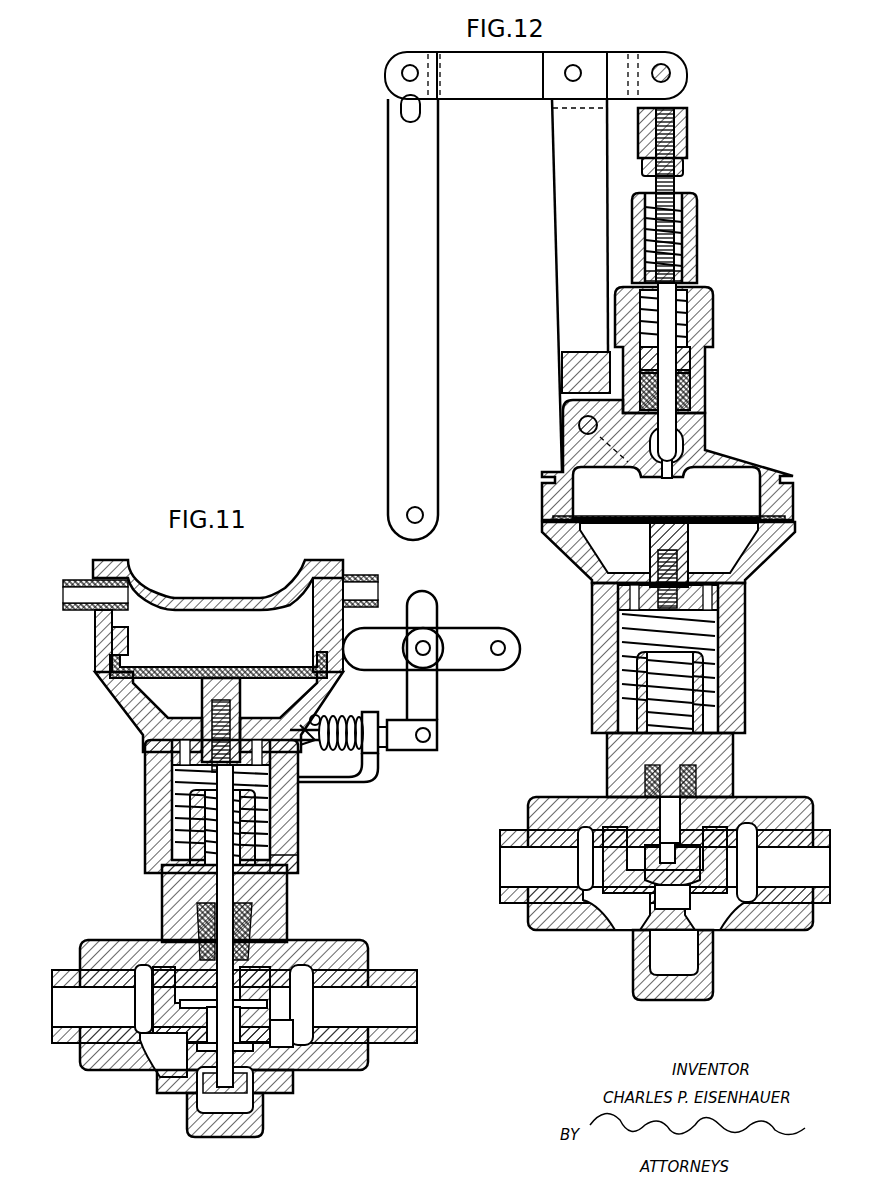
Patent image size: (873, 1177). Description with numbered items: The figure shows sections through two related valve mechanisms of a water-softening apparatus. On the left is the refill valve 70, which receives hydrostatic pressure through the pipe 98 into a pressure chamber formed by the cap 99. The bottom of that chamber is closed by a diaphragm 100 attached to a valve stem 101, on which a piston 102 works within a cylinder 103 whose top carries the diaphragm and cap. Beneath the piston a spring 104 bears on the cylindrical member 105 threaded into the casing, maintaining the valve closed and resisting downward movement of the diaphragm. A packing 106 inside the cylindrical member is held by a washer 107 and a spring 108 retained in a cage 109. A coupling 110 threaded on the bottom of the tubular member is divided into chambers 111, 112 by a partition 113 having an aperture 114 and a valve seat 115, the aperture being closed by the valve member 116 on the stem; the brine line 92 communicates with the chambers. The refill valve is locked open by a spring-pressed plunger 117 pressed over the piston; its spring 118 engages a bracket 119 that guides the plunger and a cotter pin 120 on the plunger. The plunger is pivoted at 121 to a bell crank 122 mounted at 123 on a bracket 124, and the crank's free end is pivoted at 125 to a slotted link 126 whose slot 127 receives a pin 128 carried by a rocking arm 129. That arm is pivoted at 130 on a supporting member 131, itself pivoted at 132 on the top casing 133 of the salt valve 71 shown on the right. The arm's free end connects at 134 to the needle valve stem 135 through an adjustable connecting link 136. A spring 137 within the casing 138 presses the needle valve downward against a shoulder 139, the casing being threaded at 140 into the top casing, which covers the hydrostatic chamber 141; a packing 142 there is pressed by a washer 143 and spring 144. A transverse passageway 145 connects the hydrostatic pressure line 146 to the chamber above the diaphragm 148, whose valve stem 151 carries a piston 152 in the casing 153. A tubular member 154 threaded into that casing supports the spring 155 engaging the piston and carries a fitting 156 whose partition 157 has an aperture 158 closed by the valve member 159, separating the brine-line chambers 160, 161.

In FIG. 11, the refill valve 70 is at (95, 678).
In FIG. 12, the lower diaphragm housing 71 is at (556, 538).
In FIG. 12, the pipe 92 is at (510, 905).
In FIG. 11, the pipe 92 is at (60, 965).
In FIG. 11, the pipe 98 is at (70, 608).
In FIG. 11, the cap 99 is at (200, 600).
In FIG. 11, the diaphragm 100 is at (248, 667).
In FIG. 11, the valve stem 101 is at (204, 712).
In FIG. 11, the piston 102 is at (172, 757).
In FIG. 11, the cylinder 103 is at (147, 792).
In FIG. 11, the spring 104 is at (175, 822).
In FIG. 11, the cylindrical member 105 is at (162, 888).
In FIG. 11, the packing 106 is at (200, 920).
In FIG. 11, the washer 107 is at (290, 897).
In FIG. 11, the spring 108 is at (298, 880).
In FIG. 11, the cage 109 is at (175, 846).
In FIG. 11, the coupling 110 is at (335, 943).
In FIG. 11, the chamber 111 is at (283, 990).
In FIG. 11, the chamber 112 is at (145, 1032).
In FIG. 11, the partition 113 is at (153, 1000).
In FIG. 11, the aperture 114 is at (212, 1003).
In FIG. 11, the valve seat 115 is at (200, 1045).
In FIG. 11, the valve member 116 is at (192, 1115).
In FIG. 11, the spring-pressed plunger 117 is at (382, 752).
In FIG. 11, the spring 118 is at (350, 752).
In FIG. 11, the bracket 119 is at (372, 714).
In FIG. 11, the cotter pin 120 is at (328, 755).
In FIG. 11, the pivot 121 is at (431, 737).
In FIG. 11, the bell crank 122 is at (437, 700).
In FIG. 11, the pivot 123 is at (430, 645).
In FIG. 11, the bracket 124 is at (390, 628).
In FIG. 12, the pivot 125 is at (423, 516).
In FIG. 11, the pivot 125 is at (505, 650).
In FIG. 12, the slotted link 126 is at (390, 194).
In FIG. 12, the slot 127 is at (401, 109).
In FIG. 12, the pin 128 is at (405, 71).
In FIG. 12, the rocking arm 129 is at (480, 99).
In FIG. 12, the pivot 130 is at (570, 78).
In FIG. 12, the supporting member 131 is at (562, 159).
In FIG. 12, the pivot 132 is at (578, 425).
In FIG. 12, the top casing 133 is at (562, 452).
In FIG. 12, the pivot 134 is at (671, 73).
In FIG. 12, the needle valve stem 135 is at (678, 185).
In FIG. 12, the adjustable connecting link 136 is at (688, 138).
In FIG. 12, the spring 137 is at (687, 232).
In FIG. 12, the casing 138 is at (698, 246).
In FIG. 12, the shoulder 139 is at (690, 276).
In FIG. 12, the threaded connection 140 is at (706, 313).
In FIG. 12, the hydrostatic chamber 141 is at (746, 478).
In FIG. 12, the packing 142 is at (700, 396).
In FIG. 12, the washer 143 is at (705, 370).
In FIG. 12, the spring 144 is at (700, 330).
In FIG. 12, the transverse passageway 145 is at (640, 470).
In FIG. 11, the hydrostatic pressure line 146 is at (360, 575).
In FIG. 12, the diaphragm 148 is at (714, 516).
In FIG. 12, the valve stem 151 is at (650, 560).
In FIG. 12, the piston 152 is at (626, 603).
In FIG. 12, the casing 153 is at (600, 620).
In FIG. 12, the tubular member 154 is at (607, 748).
In FIG. 12, the spring 155 is at (637, 703).
In FIG. 12, the fitting 156 is at (552, 803).
In FIG. 12, the partition 157 is at (603, 875).
In FIG. 12, the aperture 158 is at (676, 907).
In FIG. 12, the valve member 159 is at (700, 862).
In FIG. 12, the chamber 160 is at (760, 858).
In FIG. 12, the chamber 161 is at (600, 905).